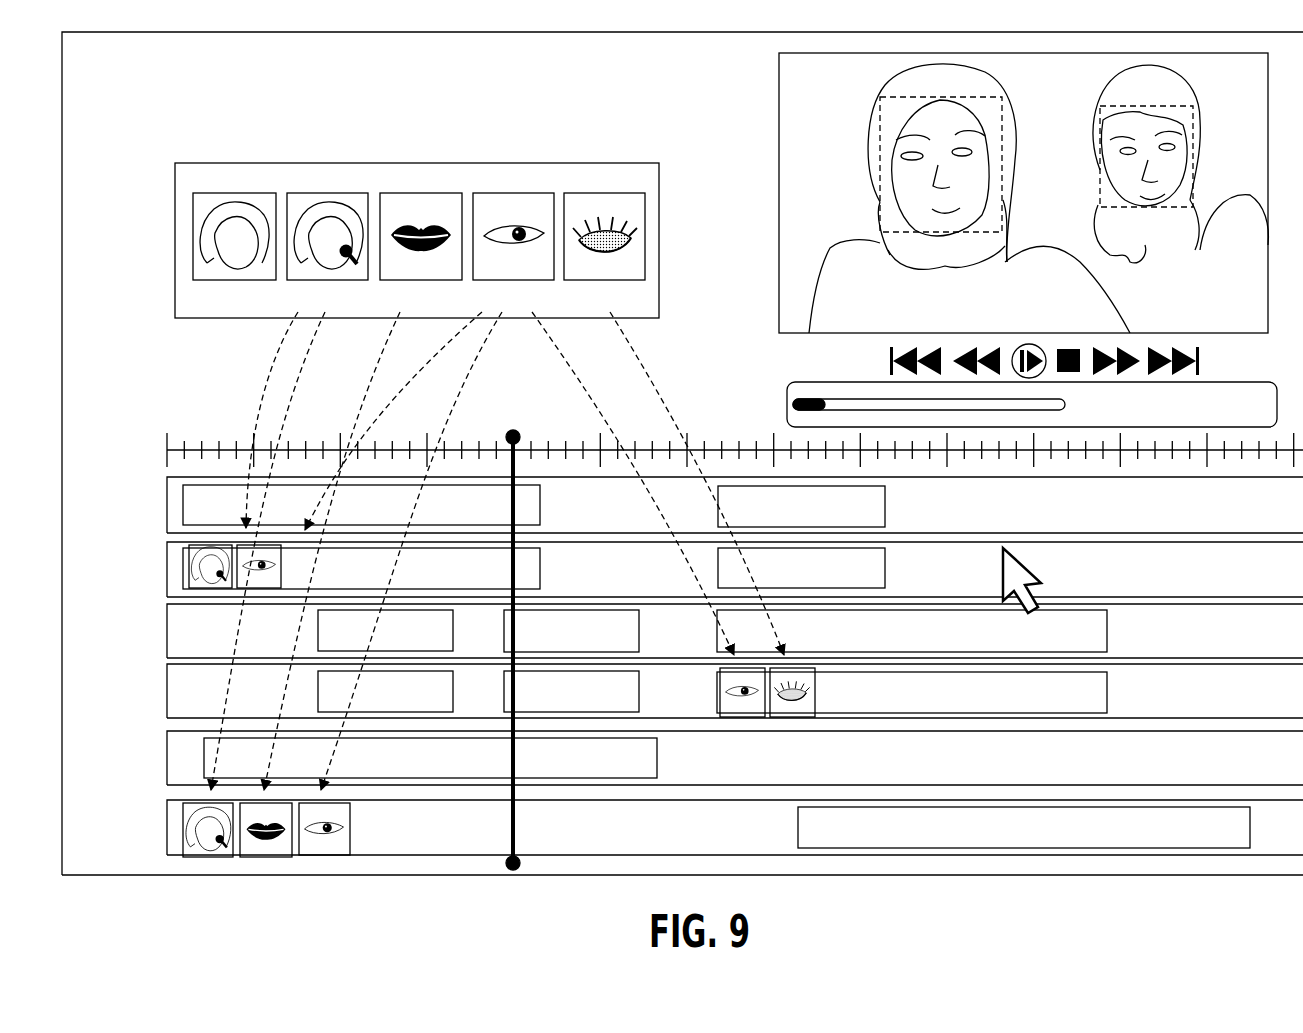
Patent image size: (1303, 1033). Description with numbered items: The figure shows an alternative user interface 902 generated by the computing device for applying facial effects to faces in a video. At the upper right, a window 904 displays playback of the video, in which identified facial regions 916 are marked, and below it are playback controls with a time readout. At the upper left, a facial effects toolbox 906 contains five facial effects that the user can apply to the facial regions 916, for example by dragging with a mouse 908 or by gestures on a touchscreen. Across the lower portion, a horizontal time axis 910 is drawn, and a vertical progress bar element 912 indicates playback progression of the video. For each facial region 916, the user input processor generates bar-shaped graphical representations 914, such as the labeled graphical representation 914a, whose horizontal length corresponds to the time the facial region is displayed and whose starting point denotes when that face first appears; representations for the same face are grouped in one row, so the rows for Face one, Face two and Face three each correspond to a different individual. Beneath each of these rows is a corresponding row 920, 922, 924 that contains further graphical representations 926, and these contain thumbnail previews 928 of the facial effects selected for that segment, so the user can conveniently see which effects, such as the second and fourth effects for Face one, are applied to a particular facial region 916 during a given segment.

The user interface 902 is at (128, 66).
The window 904 is at (778, 80).
The facial effects toolbox 906 is at (175, 222).
The mouse 908 is at (1022, 560).
The time axis 910 is at (204, 429).
The progress bar element 912 is at (517, 617).
The graphical representations 914 is at (735, 460).
The graphical representation 914a is at (471, 513).
The facial regions 916 is at (1100, 142).
The row 920 is at (697, 549).
The row 922 is at (167, 698).
The row 924 is at (167, 832).
The graphical representations 926 is at (712, 568).
The thumbnail previews 928 is at (292, 564).